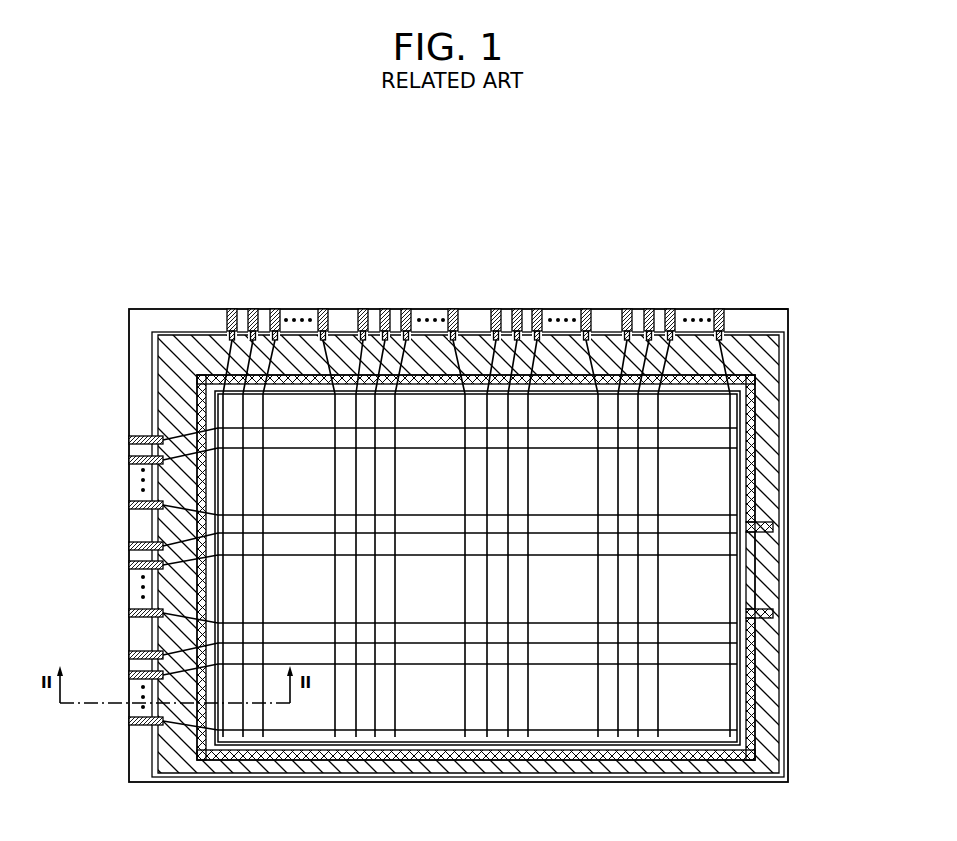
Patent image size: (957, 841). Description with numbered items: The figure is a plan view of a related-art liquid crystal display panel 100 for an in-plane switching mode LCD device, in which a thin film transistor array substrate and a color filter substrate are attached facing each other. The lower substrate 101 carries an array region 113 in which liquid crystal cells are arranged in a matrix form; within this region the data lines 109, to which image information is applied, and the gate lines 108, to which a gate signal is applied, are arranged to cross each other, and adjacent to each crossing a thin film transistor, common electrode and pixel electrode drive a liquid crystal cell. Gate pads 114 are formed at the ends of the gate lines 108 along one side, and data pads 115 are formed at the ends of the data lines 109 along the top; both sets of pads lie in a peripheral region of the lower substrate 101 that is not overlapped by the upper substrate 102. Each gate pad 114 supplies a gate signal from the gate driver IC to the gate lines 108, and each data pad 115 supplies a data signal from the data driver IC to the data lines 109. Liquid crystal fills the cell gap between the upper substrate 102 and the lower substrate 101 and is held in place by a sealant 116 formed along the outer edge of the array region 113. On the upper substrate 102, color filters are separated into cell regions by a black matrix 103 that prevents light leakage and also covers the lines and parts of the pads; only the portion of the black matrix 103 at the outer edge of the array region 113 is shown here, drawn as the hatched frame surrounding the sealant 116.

The liquid crystal display panel 100 is at (149, 288).
The lower substrate 101 is at (753, 308).
The upper substrate 102 is at (788, 319).
The black matrix 103 is at (779, 378).
The gate lines 108 is at (693, 622).
The data lines 109 is at (660, 697).
The array region 113 is at (447, 494).
The gate pads 114 is at (110, 728).
The data pads 115 is at (730, 289).
The sealant 116 is at (755, 458).